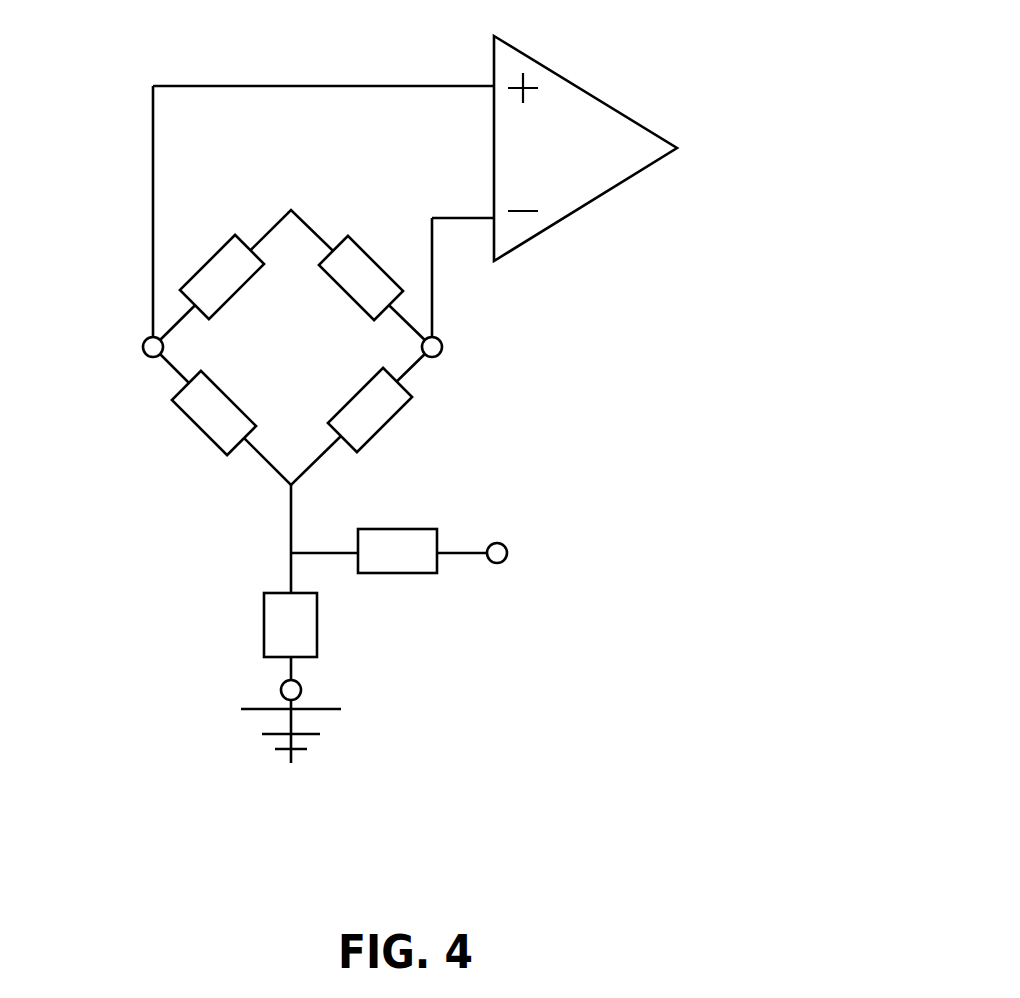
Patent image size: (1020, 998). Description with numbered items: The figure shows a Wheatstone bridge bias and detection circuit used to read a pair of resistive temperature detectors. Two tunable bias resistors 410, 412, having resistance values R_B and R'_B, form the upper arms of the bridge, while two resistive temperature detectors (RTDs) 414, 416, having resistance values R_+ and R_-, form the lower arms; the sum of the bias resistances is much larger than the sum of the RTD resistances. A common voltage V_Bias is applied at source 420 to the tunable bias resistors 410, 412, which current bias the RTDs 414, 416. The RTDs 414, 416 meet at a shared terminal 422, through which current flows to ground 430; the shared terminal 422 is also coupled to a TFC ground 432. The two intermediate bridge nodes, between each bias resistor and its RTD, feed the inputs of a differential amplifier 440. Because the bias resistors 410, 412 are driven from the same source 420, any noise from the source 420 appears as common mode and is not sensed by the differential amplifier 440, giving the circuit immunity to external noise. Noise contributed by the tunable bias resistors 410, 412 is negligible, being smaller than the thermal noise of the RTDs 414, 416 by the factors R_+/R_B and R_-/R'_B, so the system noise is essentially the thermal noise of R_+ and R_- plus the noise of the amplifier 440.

The tunable bias resistor 410 is at (190, 283).
The tunable bias resistor 412 is at (393, 275).
The resistive temperature detector 414 is at (218, 448).
The resistive temperature detector 416 is at (383, 430).
The source 420 is at (288, 209).
The shared terminal 422 is at (287, 482).
The ground 430 is at (283, 687).
The TFC ground 432 is at (503, 562).
The differential amplifier 440 is at (622, 110).